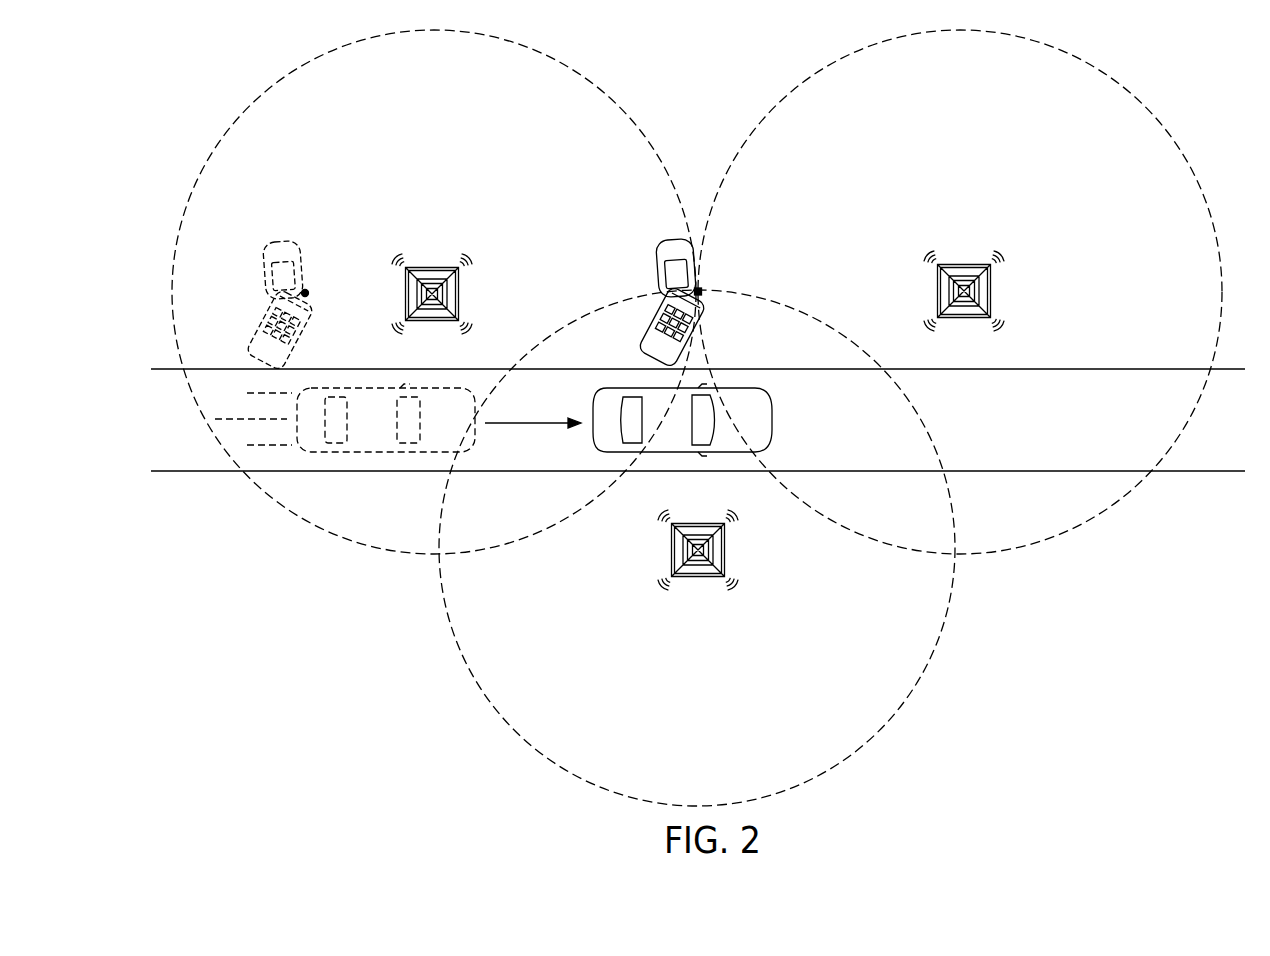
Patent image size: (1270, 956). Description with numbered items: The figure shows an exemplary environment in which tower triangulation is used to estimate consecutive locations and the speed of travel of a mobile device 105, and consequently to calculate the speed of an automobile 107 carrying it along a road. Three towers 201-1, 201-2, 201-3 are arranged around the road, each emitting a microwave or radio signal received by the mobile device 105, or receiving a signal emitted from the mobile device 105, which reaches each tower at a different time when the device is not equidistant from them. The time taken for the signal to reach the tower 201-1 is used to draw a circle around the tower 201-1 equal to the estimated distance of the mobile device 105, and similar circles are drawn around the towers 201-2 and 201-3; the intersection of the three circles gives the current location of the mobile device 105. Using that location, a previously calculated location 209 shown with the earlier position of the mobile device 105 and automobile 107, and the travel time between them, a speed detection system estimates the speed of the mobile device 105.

The mobile device 105 is at (303, 275).
The automobile 107 is at (357, 387).
The previously calculated location 209 is at (308, 292).
The tower 201-1 is at (458, 293).
The tower 201-2 is at (990, 290).
The tower 201-3 is at (724, 549).